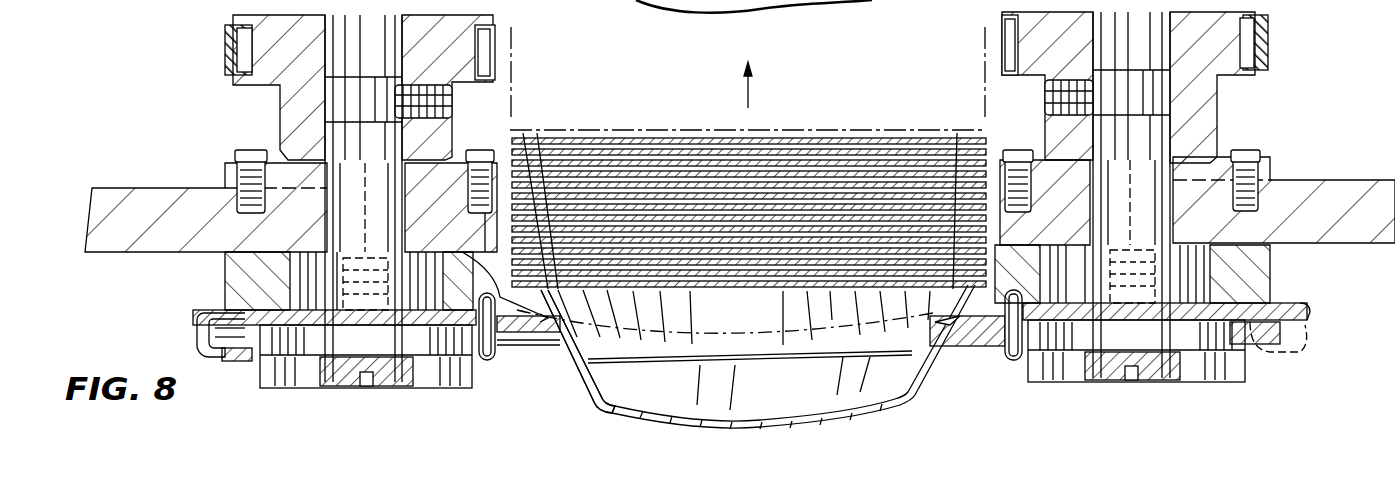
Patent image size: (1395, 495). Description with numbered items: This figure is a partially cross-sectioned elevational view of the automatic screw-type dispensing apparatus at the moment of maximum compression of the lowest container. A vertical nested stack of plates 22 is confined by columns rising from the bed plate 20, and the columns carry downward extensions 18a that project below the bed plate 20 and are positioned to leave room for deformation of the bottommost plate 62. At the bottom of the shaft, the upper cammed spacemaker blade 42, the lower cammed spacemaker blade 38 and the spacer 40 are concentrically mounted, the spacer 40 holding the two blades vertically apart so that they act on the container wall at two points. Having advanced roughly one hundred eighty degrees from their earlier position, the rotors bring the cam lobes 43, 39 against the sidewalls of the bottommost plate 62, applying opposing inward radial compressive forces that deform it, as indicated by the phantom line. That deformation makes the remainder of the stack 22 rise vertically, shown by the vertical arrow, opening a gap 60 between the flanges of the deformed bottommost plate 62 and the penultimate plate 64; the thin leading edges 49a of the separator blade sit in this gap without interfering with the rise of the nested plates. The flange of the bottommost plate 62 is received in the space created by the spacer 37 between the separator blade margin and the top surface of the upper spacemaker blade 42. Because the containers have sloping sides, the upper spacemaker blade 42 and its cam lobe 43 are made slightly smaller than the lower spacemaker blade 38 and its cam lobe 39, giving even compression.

The column extension 18a is at (567, 0).
The bed plate 20 is at (1365, 203).
The stack of plates 22 is at (704, 118).
The spacer 37 is at (197, 322).
The lower cammed spacemaker blade 38 is at (222, 355).
The cam lobe 39 is at (967, 350).
The spacer 40 is at (218, 341).
The upper cammed spacemaker blade 42 is at (215, 331).
The cam lobe 43 is at (980, 350).
The leading edge 49a is at (528, 355).
The gap 60 is at (877, 332).
The bottommost plate 62 is at (583, 378).
The penultimate plate 64 is at (494, 274).